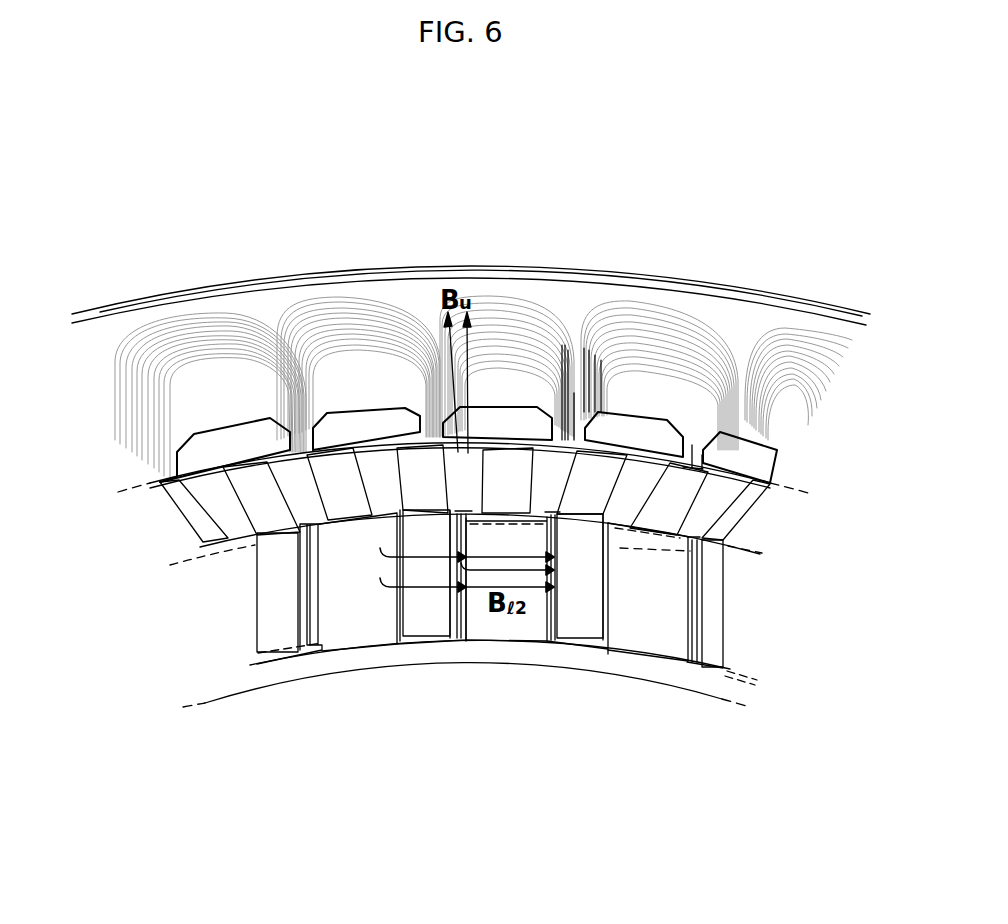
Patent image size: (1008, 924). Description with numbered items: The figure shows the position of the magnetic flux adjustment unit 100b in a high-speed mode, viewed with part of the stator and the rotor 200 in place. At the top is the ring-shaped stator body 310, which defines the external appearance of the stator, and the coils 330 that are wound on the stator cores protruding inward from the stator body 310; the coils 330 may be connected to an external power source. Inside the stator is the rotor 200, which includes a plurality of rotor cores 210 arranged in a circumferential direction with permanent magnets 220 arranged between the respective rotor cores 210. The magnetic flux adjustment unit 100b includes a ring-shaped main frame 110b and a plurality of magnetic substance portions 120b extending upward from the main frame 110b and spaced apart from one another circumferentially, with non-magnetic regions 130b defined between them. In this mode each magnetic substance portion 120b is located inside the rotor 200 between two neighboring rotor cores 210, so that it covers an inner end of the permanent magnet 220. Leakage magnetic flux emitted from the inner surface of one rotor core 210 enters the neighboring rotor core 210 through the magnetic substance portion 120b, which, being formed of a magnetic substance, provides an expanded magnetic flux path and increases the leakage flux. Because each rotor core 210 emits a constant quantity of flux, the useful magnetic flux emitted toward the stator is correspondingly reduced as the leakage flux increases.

The stator body 310 is at (586, 300).
The coils 330 is at (347, 330).
The rotor 200 is at (428, 555).
The rotor cores 210 is at (222, 515).
The permanent magnets 220 is at (268, 573).
The magnetic flux adjustment unit 100b is at (470, 661).
The main frame 110b is at (298, 667).
The magnetic substance portions 120b is at (356, 624).
The non-magnetic regions 130b is at (430, 620).